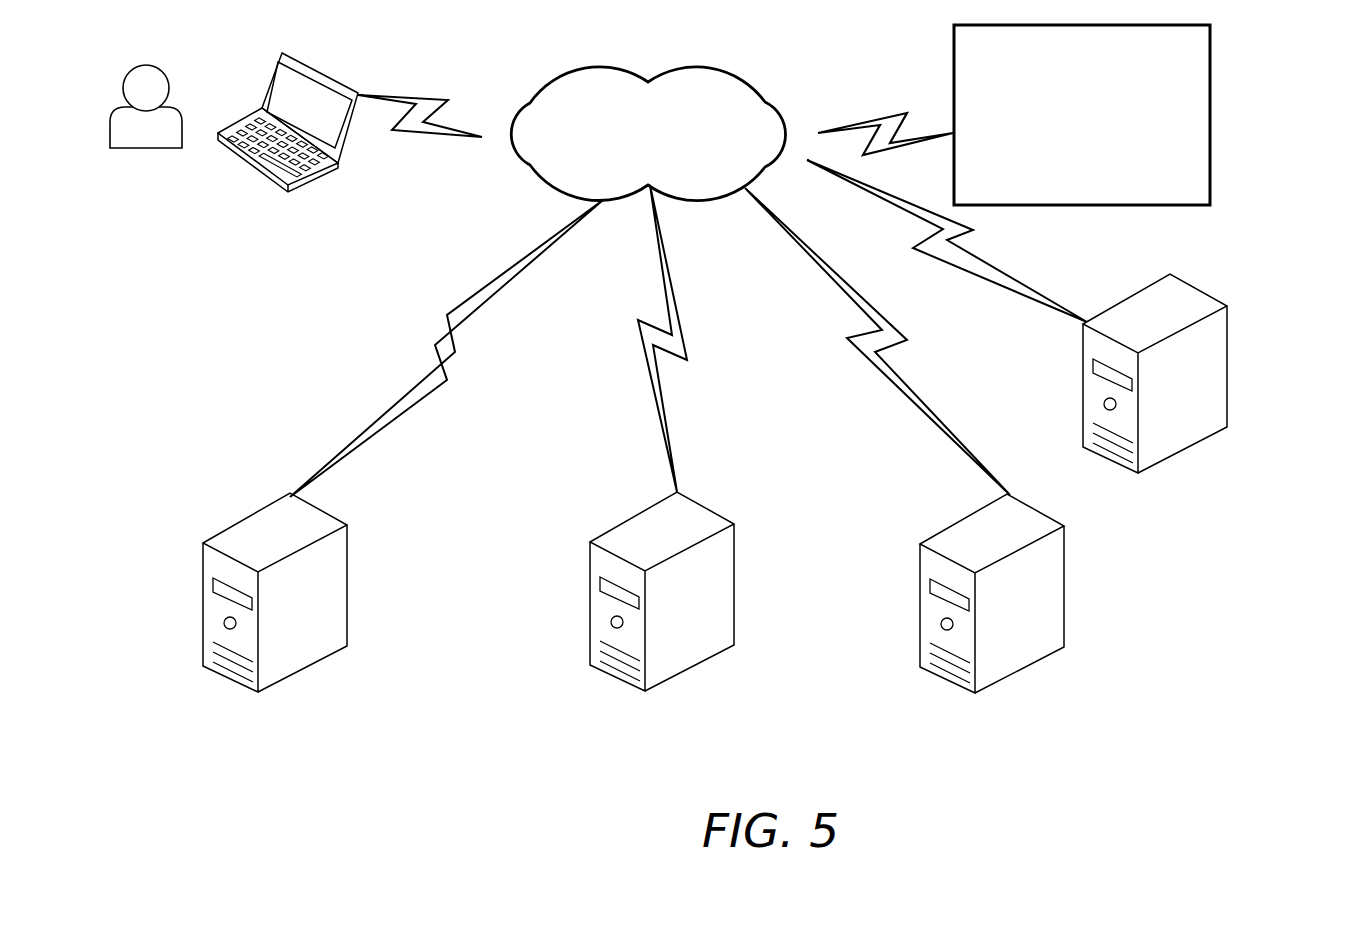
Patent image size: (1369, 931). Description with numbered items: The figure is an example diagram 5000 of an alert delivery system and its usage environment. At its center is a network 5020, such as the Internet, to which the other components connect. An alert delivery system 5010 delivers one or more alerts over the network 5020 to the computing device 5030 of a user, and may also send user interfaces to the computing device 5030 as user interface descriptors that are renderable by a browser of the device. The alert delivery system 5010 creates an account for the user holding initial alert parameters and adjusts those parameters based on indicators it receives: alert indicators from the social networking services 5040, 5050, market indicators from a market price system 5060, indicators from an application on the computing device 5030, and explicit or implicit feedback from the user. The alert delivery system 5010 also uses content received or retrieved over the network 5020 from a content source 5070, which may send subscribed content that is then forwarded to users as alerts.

The example diagram 5000 is at (734, 400).
The alert delivery system 5010 is at (1078, 205).
The network 5020 is at (600, 65).
The computing device 5030 is at (287, 190).
The social networking service 5040 is at (320, 592).
The social networking service 5050 is at (707, 591).
The market price system 5060 is at (1037, 593).
The content source 5070 is at (1200, 373).